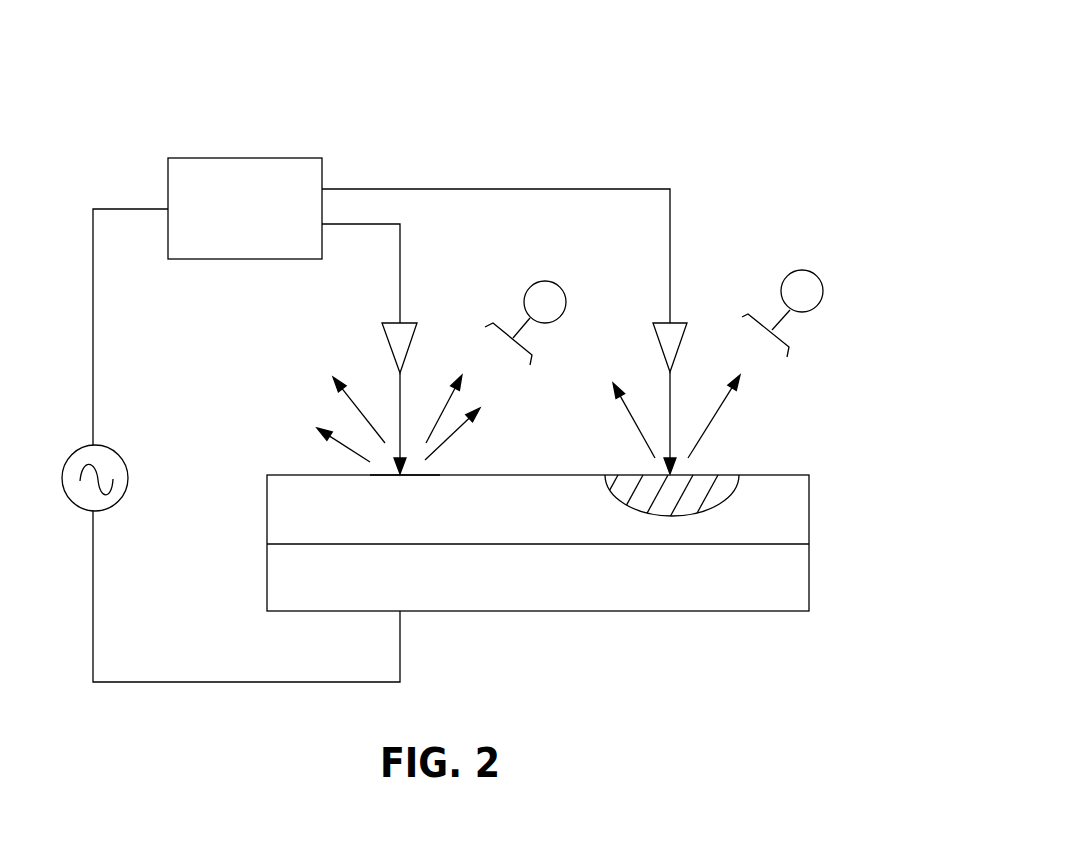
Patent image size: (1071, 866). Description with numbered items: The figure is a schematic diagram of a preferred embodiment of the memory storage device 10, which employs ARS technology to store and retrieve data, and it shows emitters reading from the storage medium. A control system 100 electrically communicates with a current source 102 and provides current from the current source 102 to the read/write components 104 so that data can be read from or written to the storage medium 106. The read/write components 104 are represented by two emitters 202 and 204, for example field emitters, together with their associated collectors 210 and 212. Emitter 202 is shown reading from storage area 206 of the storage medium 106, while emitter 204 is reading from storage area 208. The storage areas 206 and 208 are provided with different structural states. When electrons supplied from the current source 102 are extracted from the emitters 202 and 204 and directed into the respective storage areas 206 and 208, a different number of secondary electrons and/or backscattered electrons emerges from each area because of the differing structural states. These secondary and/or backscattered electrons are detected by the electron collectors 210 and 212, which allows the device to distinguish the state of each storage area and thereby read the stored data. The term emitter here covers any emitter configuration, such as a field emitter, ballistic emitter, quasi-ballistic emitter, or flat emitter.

The memory storage device 10 is at (778, 94).
The control system 100 is at (263, 158).
The current source 102 is at (128, 478).
The read/write components 104 is at (542, 175).
The storage medium 106 is at (778, 611).
The emitter 202 is at (405, 322).
The emitter 204 is at (677, 318).
The storage area 206 is at (434, 475).
The storage area 208 is at (723, 472).
The collector 210 is at (543, 281).
The collector 212 is at (805, 270).